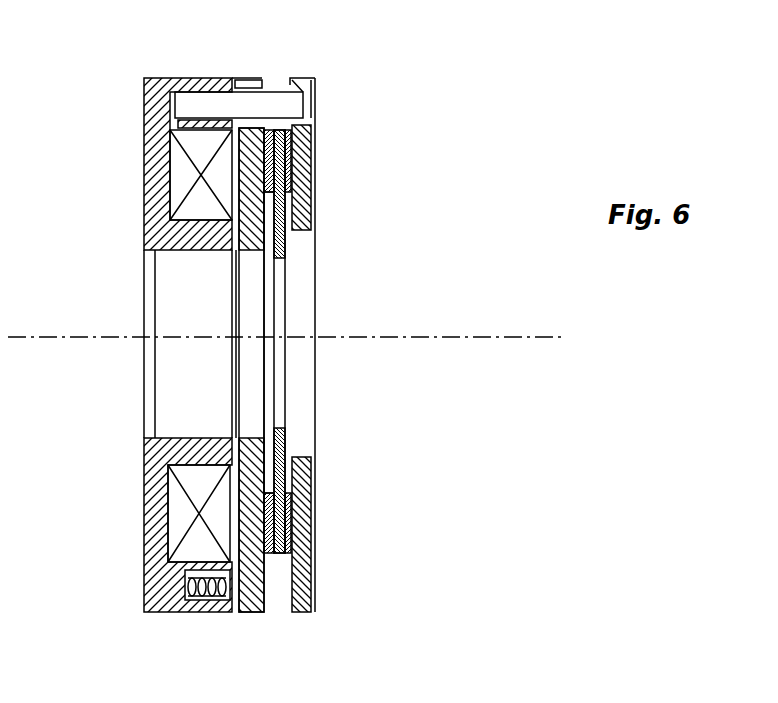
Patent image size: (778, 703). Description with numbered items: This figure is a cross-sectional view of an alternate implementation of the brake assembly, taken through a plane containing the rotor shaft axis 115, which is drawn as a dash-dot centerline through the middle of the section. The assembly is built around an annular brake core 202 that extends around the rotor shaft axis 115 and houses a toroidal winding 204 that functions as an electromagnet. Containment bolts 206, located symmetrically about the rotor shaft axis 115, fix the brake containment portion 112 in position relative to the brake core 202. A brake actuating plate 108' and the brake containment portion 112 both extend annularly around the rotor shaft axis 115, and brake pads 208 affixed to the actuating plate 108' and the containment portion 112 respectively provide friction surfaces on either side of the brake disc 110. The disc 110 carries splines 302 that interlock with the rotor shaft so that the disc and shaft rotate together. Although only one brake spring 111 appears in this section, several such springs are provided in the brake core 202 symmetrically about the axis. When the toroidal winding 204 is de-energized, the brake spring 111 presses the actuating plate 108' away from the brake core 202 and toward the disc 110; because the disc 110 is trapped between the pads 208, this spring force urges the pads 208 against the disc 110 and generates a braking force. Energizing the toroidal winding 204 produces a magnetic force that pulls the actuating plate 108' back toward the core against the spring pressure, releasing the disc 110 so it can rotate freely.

The brake core 202 is at (162, 88).
The toroidal winding 204 is at (180, 172).
The containment bolts 206 is at (270, 103).
The brake pads 208 is at (293, 148).
The brake disc 110 is at (288, 213).
The brake containment portion 112 is at (300, 162).
The splines 302 is at (285, 262).
The brake actuating plate 108' is at (334, 370).
The rotor shaft axis 115 is at (492, 333).
The brake spring 111 is at (218, 600).